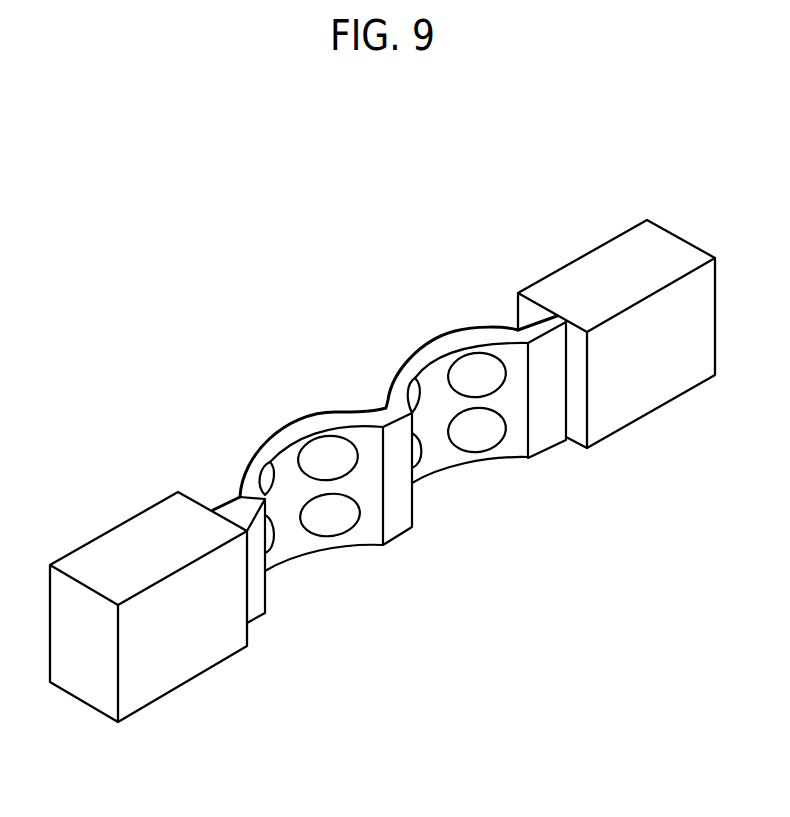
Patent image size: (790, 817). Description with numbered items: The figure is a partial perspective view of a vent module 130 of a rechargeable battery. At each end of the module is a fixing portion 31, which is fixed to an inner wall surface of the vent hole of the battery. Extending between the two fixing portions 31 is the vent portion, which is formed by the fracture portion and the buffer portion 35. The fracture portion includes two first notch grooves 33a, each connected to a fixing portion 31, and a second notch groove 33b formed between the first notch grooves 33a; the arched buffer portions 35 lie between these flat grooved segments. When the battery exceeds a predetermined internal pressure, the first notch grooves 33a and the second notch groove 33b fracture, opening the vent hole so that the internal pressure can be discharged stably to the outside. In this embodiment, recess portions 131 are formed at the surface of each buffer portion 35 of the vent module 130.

The fixing portion 31 is at (183, 670).
The vent module 130 is at (233, 337).
The first notch groove 33a is at (253, 613).
The second notch groove 33b is at (402, 532).
The buffer portion 35 is at (275, 437).
The recess portion 131 is at (327, 523).